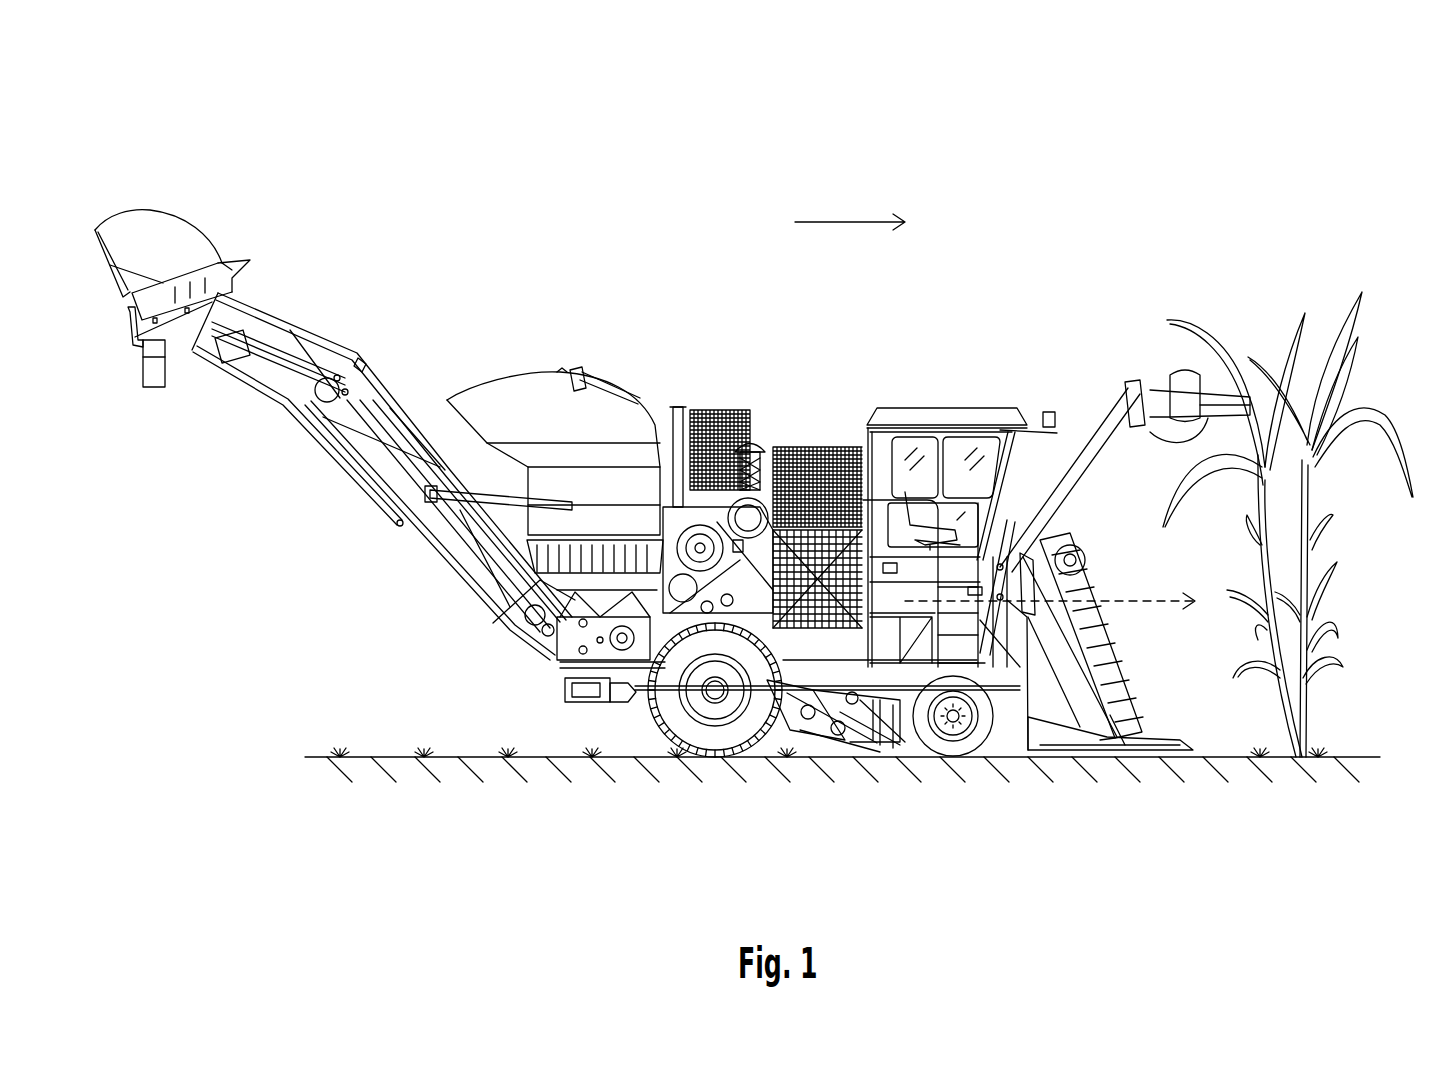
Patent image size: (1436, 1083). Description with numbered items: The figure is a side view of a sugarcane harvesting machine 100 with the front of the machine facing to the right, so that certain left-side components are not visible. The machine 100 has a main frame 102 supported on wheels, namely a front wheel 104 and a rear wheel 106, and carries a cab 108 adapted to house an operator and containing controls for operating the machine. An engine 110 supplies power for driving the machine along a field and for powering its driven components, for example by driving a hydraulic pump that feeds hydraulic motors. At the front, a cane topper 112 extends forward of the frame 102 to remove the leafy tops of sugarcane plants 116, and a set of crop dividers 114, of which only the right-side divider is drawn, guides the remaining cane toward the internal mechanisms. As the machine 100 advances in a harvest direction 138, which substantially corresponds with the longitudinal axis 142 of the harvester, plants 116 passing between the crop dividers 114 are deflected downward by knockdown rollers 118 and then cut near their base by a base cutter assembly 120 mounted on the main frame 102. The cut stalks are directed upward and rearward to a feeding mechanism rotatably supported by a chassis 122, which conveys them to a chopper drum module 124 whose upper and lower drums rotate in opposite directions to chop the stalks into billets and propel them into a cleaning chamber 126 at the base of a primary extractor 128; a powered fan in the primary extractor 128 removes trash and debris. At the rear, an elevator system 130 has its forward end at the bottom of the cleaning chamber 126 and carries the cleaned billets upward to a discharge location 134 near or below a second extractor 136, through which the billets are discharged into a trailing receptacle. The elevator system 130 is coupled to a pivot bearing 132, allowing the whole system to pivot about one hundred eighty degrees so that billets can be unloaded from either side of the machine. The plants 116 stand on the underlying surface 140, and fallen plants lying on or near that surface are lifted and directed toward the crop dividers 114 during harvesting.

The sugarcane harvesting machine 100 is at (540, 203).
The main frame 102 is at (1007, 737).
The front wheel 104 is at (953, 757).
The rear wheel 106 is at (718, 760).
The cab 108 is at (948, 408).
The engine 110 is at (909, 596).
The cane topper 112 is at (1170, 368).
The crop dividers 114 is at (1113, 702).
The sugarcane plants 116 is at (1310, 553).
The knockdown rollers 118 is at (1012, 710).
The base cutter assembly 120 is at (893, 742).
The chassis 122 is at (810, 726).
The chopper drum module 124 is at (676, 530).
The cleaning chamber 126 is at (597, 553).
The primary extractor 128 is at (510, 390).
The elevator system 130 is at (423, 542).
The pivot bearing 132 is at (558, 692).
The discharge location 134 is at (137, 362).
The second extractor 136 is at (118, 230).
The harvest direction 138 is at (852, 222).
The underlying surface 140 is at (385, 757).
The longitudinal axis 142 is at (1130, 601).